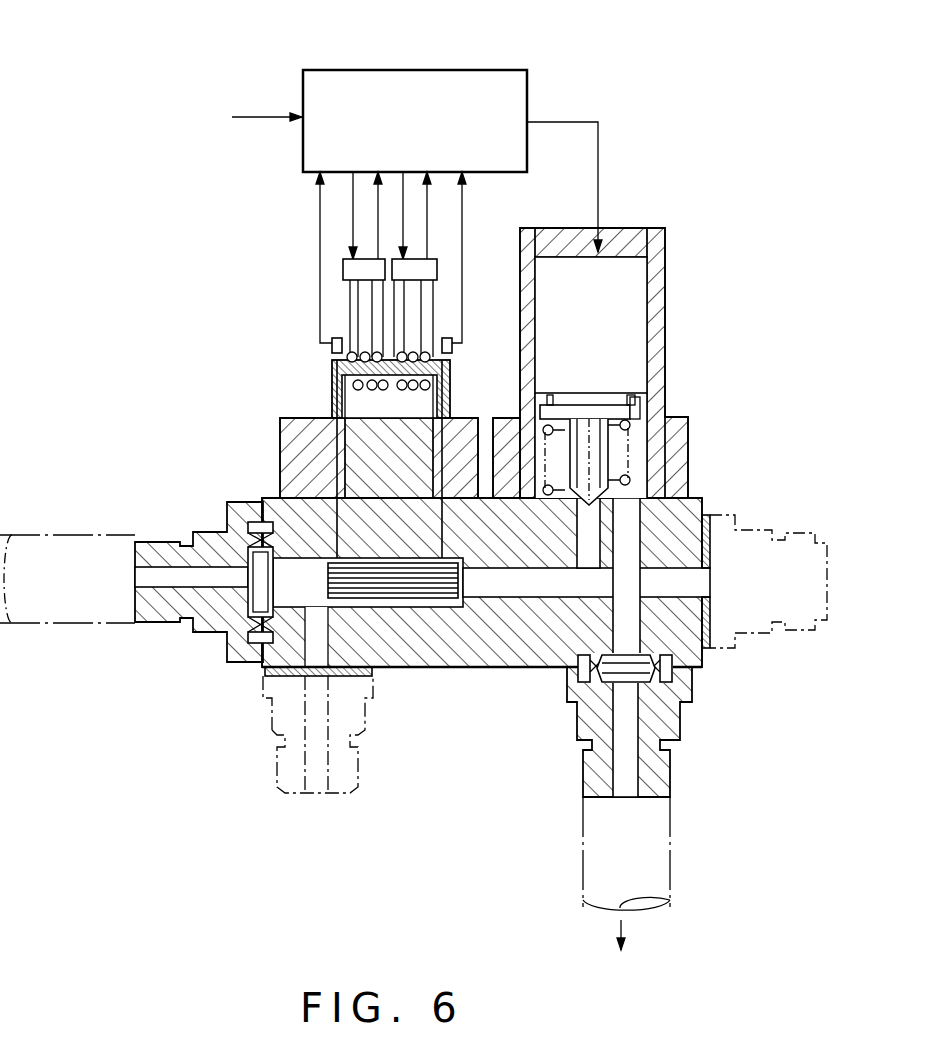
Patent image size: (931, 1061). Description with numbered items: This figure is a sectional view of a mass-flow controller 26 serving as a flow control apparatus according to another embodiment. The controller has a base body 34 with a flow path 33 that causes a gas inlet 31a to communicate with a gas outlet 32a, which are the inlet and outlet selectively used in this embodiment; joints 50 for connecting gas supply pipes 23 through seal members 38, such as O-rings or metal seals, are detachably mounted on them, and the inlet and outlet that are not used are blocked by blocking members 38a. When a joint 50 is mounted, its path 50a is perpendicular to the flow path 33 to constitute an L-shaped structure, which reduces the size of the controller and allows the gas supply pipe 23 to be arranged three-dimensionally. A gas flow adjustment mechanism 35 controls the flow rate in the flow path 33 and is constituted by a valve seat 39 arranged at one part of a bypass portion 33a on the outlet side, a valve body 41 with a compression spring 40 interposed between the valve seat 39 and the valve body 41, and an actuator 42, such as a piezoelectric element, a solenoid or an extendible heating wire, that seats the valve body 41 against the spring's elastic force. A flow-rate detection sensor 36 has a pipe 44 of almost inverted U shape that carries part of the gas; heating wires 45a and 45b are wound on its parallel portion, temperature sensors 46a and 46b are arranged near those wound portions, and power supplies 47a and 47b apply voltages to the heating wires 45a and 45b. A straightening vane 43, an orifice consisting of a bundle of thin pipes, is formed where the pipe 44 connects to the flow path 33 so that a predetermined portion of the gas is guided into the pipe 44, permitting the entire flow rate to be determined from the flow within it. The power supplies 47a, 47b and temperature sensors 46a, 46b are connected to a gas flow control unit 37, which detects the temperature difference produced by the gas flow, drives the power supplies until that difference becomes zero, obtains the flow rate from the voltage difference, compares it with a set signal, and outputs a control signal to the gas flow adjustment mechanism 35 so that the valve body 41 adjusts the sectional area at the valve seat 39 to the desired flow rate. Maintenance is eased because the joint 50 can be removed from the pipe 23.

The gas supply pipe 23 is at (75, 617).
The mass-flow controller 26 is at (628, 88).
The gas inlet 31a is at (293, 597).
The gas outlet 32a is at (652, 668).
The flow path 33 is at (527, 590).
The bypass portion 33a is at (592, 540).
The base body 34 is at (412, 672).
The gas flow adjustment mechanism 35 is at (683, 305).
The flow-rate detection sensor 36 is at (340, 365).
The gas flow control unit 37 is at (425, 70).
The seal member 38 is at (247, 530).
The blocking member 38a is at (703, 637).
The valve seat 39 is at (623, 493).
The compression spring 40 is at (612, 428).
The valve body 41 is at (597, 457).
The actuator 42 is at (637, 285).
The straightening vane 43 is at (430, 590).
The pipe 44 is at (332, 400).
The heating wire 45a is at (352, 300).
The heating wire 45b is at (430, 310).
The temperature sensor 46a is at (332, 345).
The temperature sensor 46b is at (452, 345).
The power supply 47a is at (343, 268).
The power supply 47b is at (437, 270).
The joint 50 is at (158, 630).
The path 50a is at (172, 577).